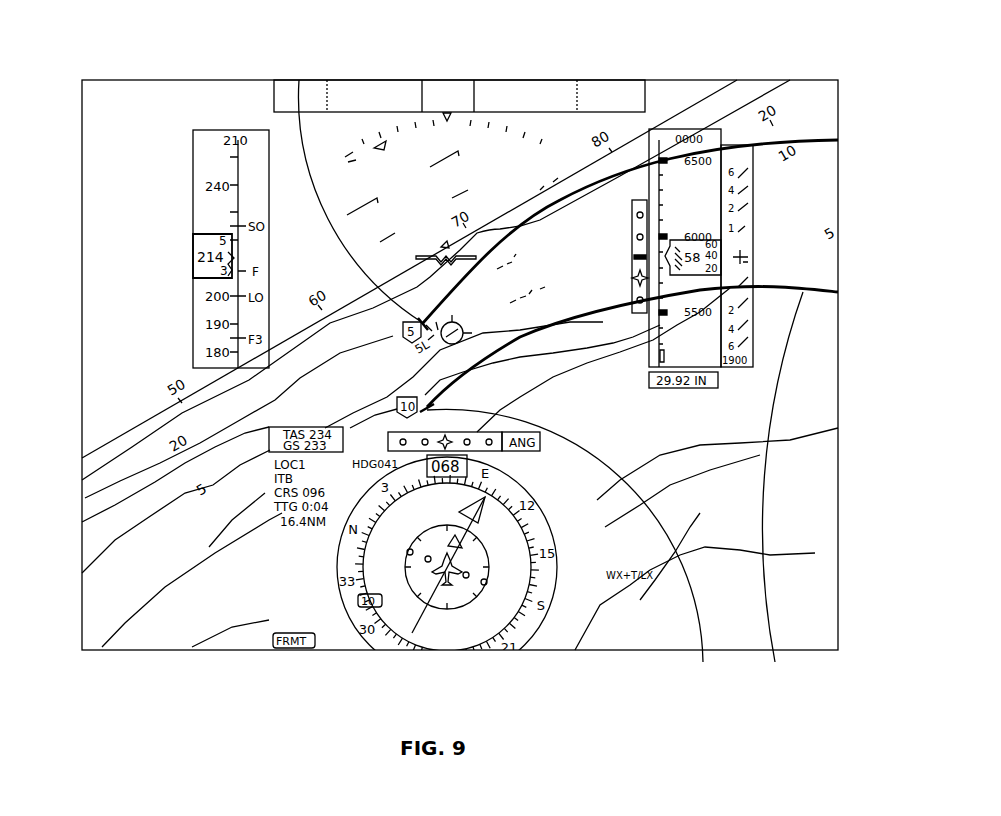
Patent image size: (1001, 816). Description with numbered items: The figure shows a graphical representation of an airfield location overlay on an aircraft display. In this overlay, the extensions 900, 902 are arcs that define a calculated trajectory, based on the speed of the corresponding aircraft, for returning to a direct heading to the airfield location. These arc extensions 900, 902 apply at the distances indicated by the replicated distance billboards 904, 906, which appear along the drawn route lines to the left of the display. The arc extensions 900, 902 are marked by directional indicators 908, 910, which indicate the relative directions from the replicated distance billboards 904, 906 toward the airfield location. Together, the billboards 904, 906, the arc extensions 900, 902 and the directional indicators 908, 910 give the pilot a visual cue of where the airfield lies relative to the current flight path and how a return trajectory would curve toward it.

The extension 900 is at (812, 143).
The extension 902 is at (780, 498).
The replicated distance billboard 904 is at (180, 425).
The replicated distance billboard 906 is at (82, 522).
The directional indicator 908 is at (299, 80).
The directional indicator 910 is at (578, 557).